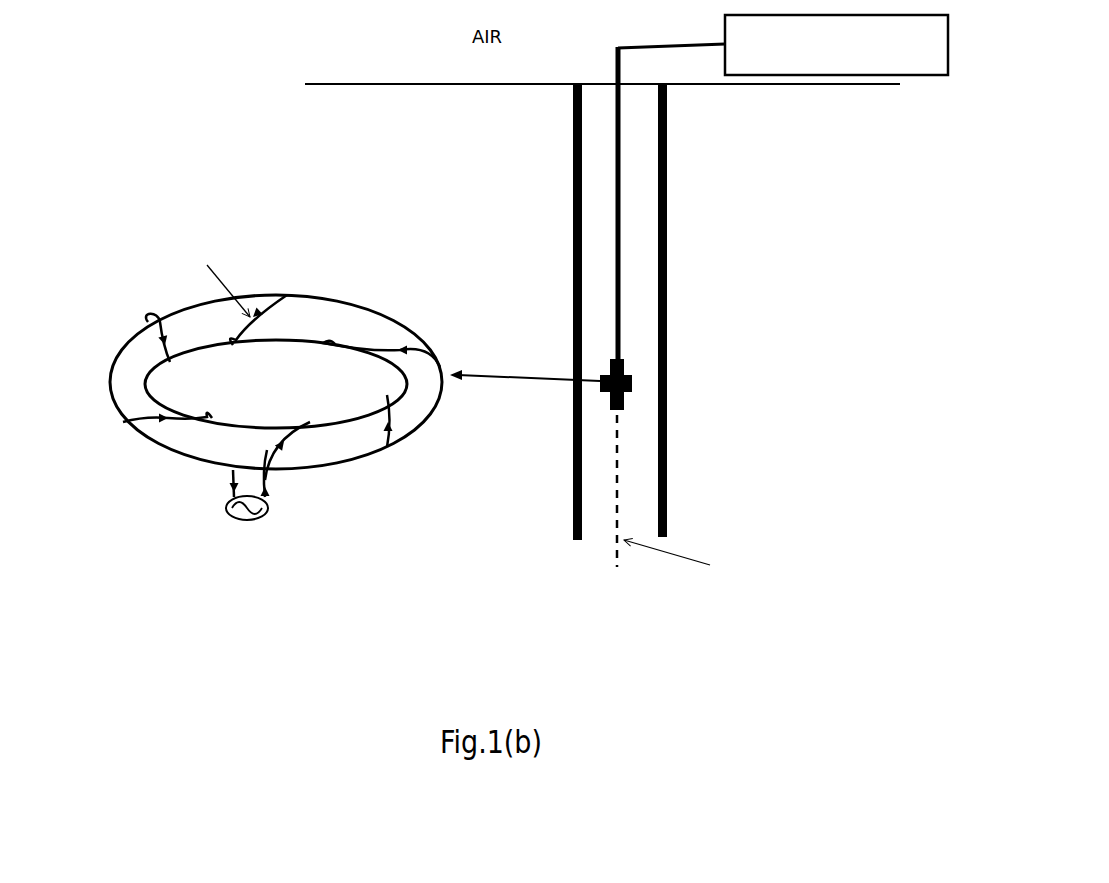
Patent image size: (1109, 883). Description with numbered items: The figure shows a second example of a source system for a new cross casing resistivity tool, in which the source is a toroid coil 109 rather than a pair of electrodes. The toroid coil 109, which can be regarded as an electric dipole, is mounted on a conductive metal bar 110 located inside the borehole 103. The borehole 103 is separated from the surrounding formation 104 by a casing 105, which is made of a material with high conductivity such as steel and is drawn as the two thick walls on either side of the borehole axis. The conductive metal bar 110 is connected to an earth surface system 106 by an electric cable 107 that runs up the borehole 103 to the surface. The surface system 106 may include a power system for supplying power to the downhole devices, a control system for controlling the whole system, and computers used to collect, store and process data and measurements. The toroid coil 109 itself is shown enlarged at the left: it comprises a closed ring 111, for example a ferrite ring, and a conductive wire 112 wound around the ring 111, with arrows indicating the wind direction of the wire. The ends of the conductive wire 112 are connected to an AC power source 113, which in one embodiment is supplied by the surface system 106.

The borehole 103 is at (612, 163).
The formation 104 is at (857, 325).
The casing 105 is at (585, 280).
The earth surface system 106 is at (722, 23).
The electric cable 107 is at (624, 210).
The toroid coil 109 is at (635, 383).
The conductive metal bar 110 is at (606, 360).
The closed ring 111 is at (340, 320).
The conductive wire 112 is at (138, 420).
The AC power source 113 is at (228, 517).